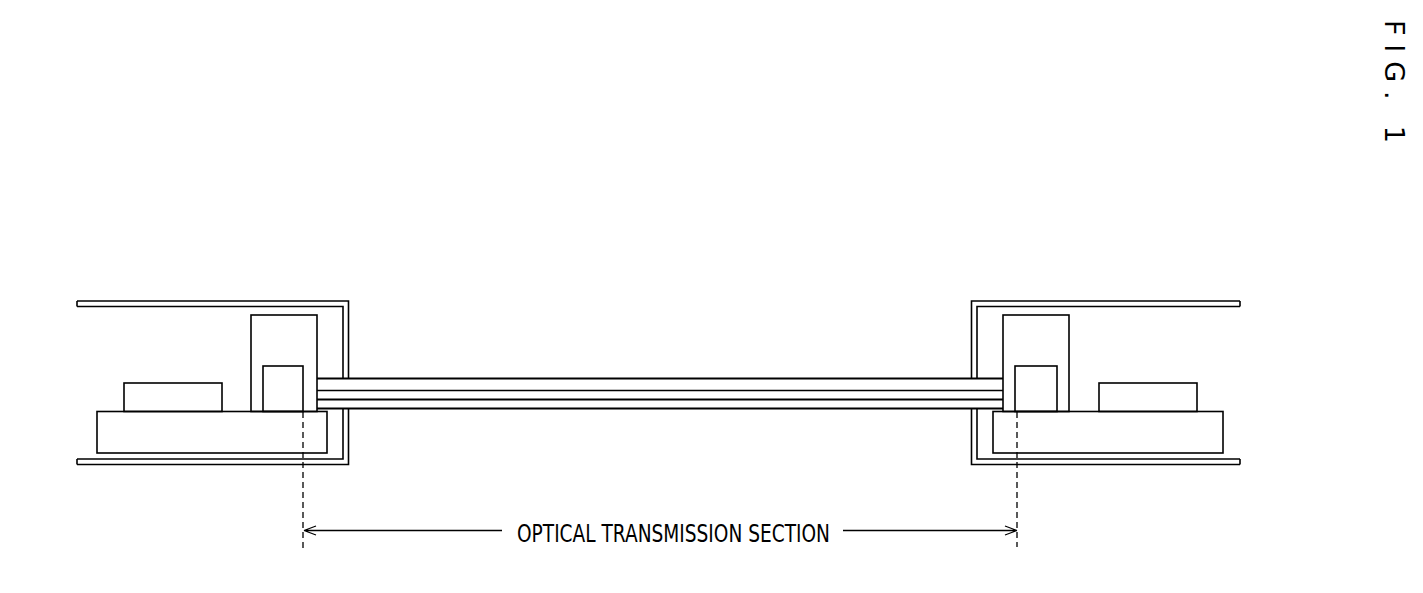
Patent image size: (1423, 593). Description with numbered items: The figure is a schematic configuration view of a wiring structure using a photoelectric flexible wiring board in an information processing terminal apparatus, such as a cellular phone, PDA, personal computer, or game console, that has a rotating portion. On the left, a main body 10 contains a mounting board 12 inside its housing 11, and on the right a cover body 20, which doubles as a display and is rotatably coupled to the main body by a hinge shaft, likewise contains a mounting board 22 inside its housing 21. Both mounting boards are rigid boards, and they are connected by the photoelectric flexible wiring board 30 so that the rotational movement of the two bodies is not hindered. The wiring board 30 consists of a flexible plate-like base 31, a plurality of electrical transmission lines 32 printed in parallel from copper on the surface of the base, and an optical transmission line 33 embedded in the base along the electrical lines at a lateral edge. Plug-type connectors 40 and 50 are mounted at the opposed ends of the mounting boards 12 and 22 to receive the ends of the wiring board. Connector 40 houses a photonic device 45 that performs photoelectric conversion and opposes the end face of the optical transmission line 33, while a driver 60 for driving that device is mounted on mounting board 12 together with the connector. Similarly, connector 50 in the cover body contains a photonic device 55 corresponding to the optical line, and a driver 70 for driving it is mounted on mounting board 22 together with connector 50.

The main body 10 is at (138, 285).
The housing 11 is at (175, 301).
The mounting board 12 is at (172, 438).
The cover body 20 is at (1189, 289).
The housing 21 is at (1143, 300).
The mounting board 22 is at (1147, 435).
The photoelectric flexible wiring board 30 is at (675, 372).
The plate-like base 31 is at (698, 411).
The electrical transmission lines 32 is at (730, 377).
The optical transmission line 33 is at (737, 399).
The connector 40 is at (302, 330).
The photonic device 45 is at (282, 378).
The connector 50 is at (1018, 327).
The photonic device 55 is at (1037, 377).
The driver 60 is at (193, 393).
The driver 70 is at (1122, 397).